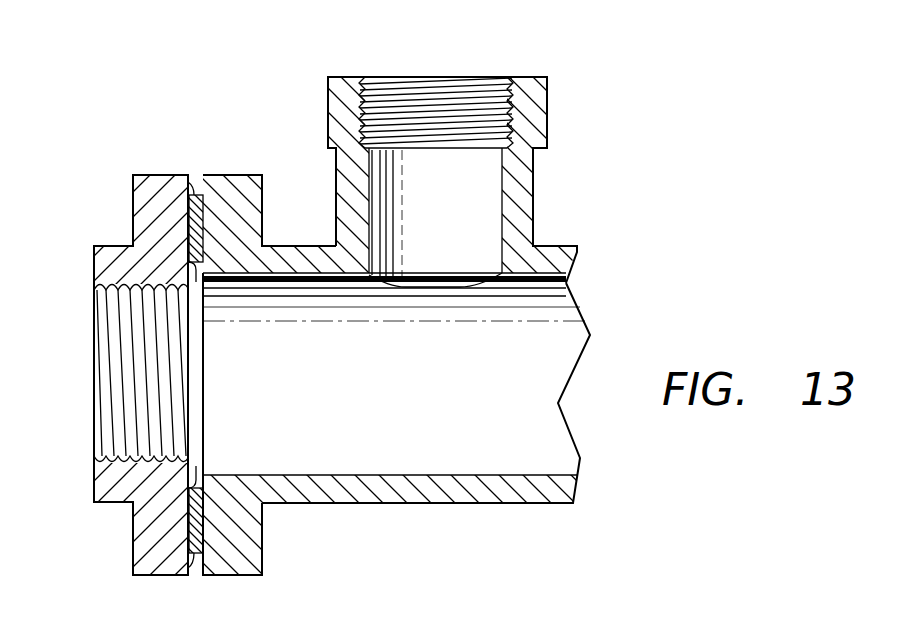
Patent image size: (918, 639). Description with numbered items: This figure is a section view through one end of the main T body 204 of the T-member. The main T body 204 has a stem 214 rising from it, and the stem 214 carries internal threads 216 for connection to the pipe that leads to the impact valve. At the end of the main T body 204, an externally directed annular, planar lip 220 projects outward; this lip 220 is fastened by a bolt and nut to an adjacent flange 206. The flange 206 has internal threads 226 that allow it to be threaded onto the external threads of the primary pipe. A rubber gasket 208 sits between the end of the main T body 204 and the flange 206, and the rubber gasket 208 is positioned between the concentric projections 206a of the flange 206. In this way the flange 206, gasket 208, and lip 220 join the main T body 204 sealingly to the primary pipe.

The main T body 204 is at (433, 505).
The flange 206 is at (164, 165).
The concentric projection 206a is at (197, 182).
The rubber gasket 208 is at (193, 222).
The stem 214 is at (538, 197).
The internal threads 216 is at (378, 100).
The annular, planar lip 220 is at (243, 176).
The internal threads 226 is at (130, 290).